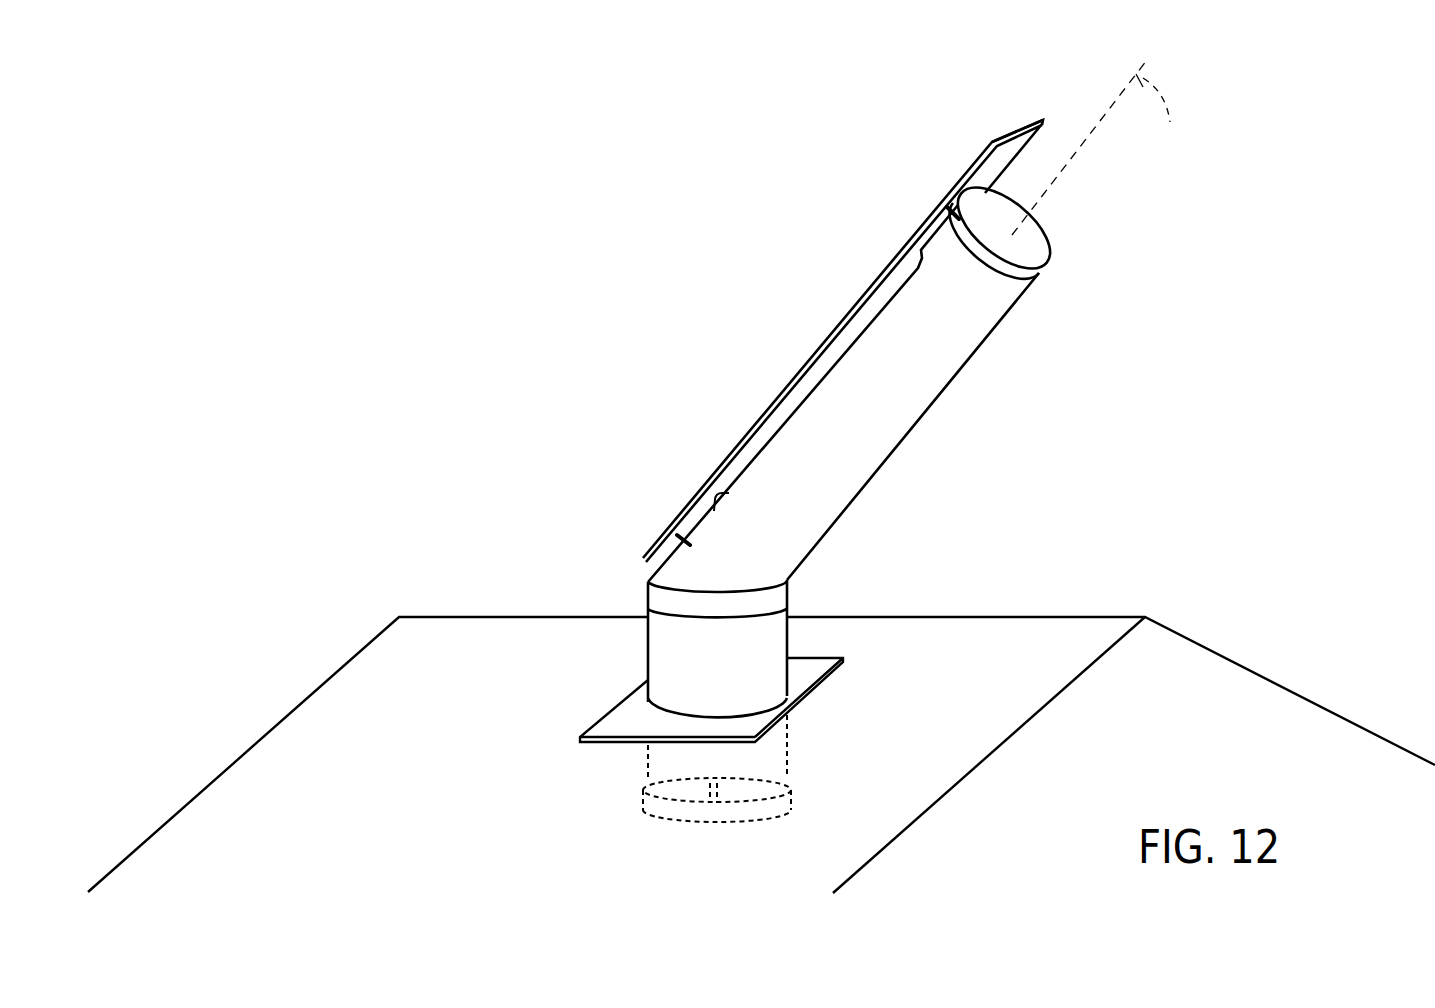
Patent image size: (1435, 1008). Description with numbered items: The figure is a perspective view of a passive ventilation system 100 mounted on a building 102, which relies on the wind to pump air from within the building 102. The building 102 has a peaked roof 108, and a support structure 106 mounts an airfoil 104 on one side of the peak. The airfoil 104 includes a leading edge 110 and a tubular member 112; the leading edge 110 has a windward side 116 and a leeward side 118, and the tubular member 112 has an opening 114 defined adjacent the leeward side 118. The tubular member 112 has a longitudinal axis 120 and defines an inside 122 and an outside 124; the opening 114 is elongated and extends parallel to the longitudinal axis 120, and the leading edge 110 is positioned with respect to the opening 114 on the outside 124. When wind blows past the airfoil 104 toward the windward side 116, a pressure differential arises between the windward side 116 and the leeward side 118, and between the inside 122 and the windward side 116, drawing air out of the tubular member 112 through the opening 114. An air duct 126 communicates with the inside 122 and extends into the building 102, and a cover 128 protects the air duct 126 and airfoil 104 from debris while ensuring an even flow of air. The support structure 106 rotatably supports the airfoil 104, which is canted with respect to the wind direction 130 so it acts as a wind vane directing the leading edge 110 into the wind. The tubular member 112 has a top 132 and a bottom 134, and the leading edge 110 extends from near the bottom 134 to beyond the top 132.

The ventilation system 100 is at (610, 270).
The building 102 is at (330, 695).
The airfoil 104 is at (845, 481).
The support structure 106 is at (795, 694).
The roof 108 is at (936, 632).
The leading edge 110 is at (678, 492).
The tubular member 112 is at (1013, 303).
The opening 114 is at (915, 277).
The windward side 116 is at (802, 367).
The leeward side 118 is at (1028, 147).
The longitudinal axis 120 is at (1101, 147).
The inside 122 is at (1060, 239).
The outside 124 is at (932, 378).
The air duct 126 is at (647, 757).
The cover 128 is at (720, 825).
The wind direction 130 is at (530, 418).
The top 132 is at (1038, 260).
The bottom 134 is at (787, 585).